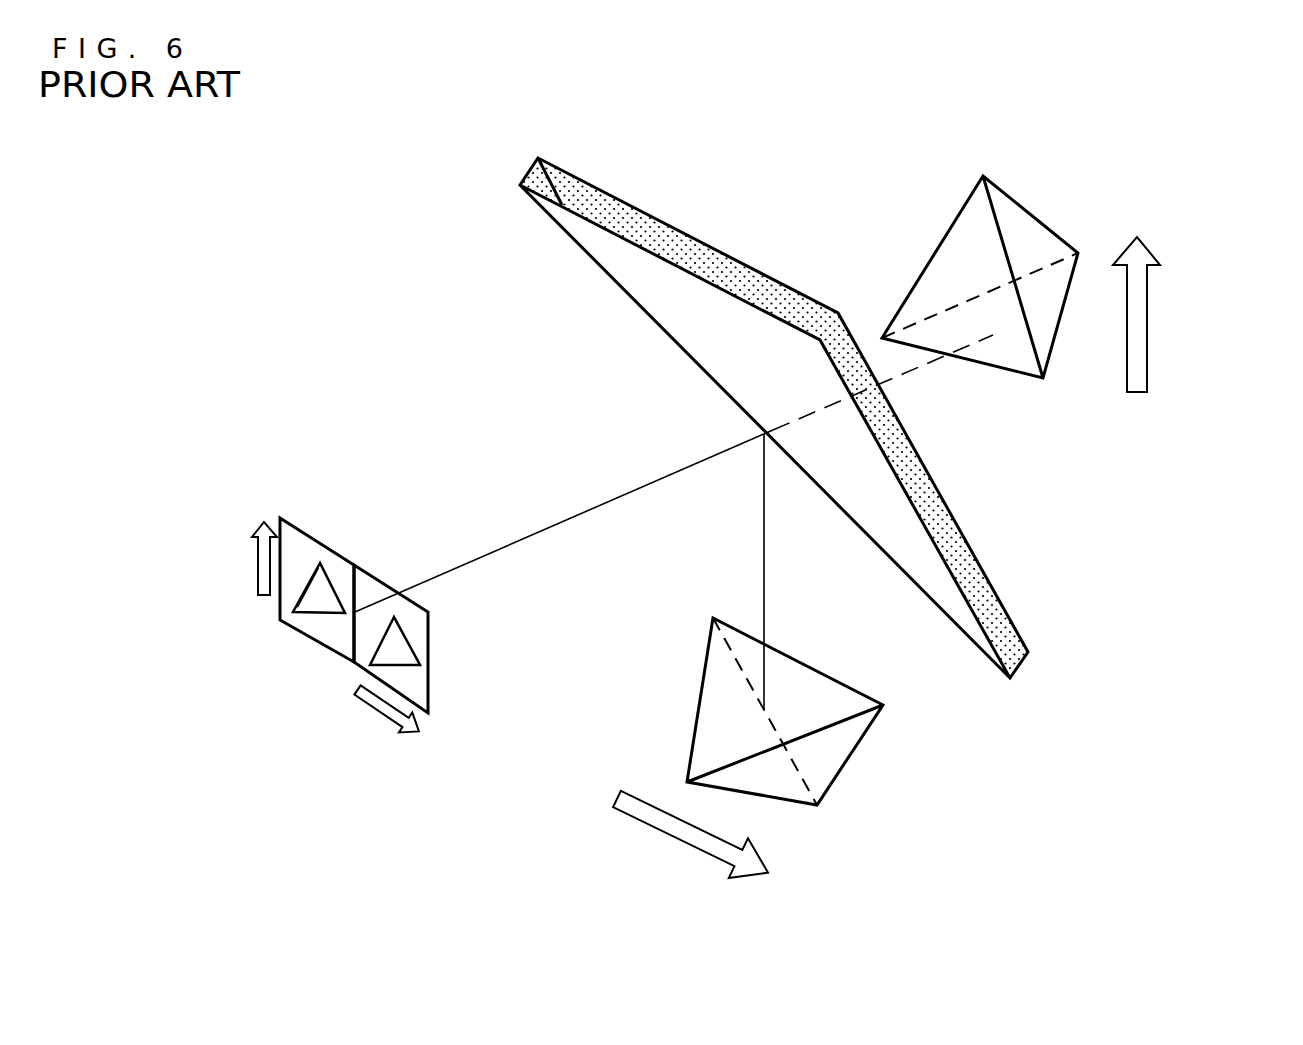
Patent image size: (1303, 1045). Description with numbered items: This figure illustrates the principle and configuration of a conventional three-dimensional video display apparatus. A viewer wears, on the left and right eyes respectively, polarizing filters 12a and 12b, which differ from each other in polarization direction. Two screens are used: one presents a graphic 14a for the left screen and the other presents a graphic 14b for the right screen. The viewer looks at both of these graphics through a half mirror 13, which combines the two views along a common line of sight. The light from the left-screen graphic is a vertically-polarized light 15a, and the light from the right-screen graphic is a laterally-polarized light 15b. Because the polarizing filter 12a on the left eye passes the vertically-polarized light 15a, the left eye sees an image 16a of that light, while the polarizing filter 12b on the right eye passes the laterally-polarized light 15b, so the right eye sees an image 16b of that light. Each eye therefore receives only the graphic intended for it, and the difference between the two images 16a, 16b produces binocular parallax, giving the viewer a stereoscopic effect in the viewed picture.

The polarizing filter 12a is at (297, 538).
The polarizing filter 12b is at (375, 587).
The half mirror 13 is at (643, 277).
The graphic for a left screen 14a is at (965, 238).
The graphic for a right screen 14b is at (712, 690).
The vertically-polarized light 15a is at (1138, 325).
The laterally-polarized light 15b is at (657, 820).
The image of vertically-polarized light 16a is at (315, 605).
The image of laterally-polarized light 16b is at (398, 647).